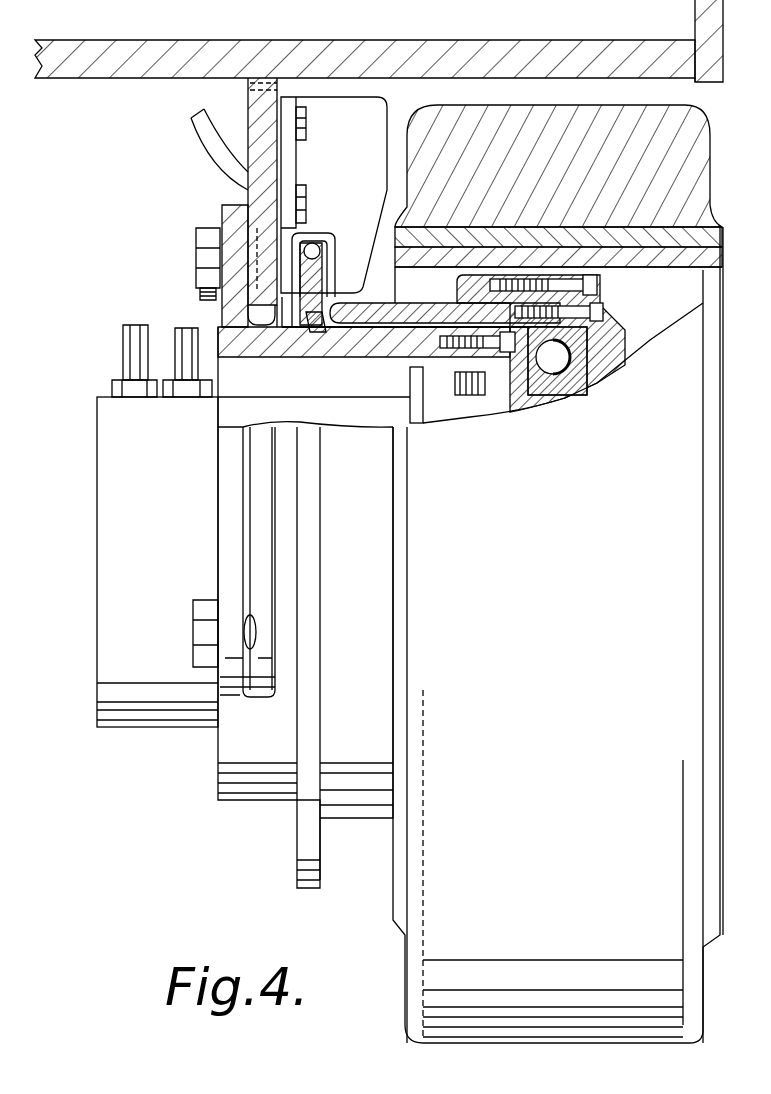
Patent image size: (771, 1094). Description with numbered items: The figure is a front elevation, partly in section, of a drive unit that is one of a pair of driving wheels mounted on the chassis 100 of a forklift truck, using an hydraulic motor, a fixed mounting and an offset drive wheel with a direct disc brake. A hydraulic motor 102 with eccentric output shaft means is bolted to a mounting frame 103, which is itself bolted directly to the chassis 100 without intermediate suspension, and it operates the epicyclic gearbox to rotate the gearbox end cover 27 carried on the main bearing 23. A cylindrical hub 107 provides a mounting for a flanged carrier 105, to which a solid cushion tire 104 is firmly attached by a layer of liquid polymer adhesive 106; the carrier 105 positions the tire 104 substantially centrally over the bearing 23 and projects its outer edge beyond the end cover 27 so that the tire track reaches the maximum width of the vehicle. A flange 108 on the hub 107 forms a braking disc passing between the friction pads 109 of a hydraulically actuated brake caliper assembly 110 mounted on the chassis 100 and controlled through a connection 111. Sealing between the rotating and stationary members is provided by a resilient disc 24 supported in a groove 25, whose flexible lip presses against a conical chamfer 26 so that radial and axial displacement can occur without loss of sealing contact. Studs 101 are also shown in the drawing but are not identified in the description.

The bearing housing 23 is at (575, 397).
The bracket foot 24 is at (290, 322).
The spring washer 25 is at (314, 336).
The lug bar 26 is at (318, 318).
The housing flange 27 is at (620, 328).
The mounting plate 100 is at (152, 66).
The studs 101 is at (180, 340).
The motor box 102 is at (103, 608).
The support plate 103 is at (358, 348).
The drum head block 104 is at (700, 145).
The liner band 105 is at (673, 265).
The packing band 106 is at (722, 250).
The flat ring 107 is at (450, 292).
The clip channel 108 is at (318, 272).
The bolt head 109 is at (312, 250).
The housing 110 is at (340, 108).
The tube 111 is at (205, 136).